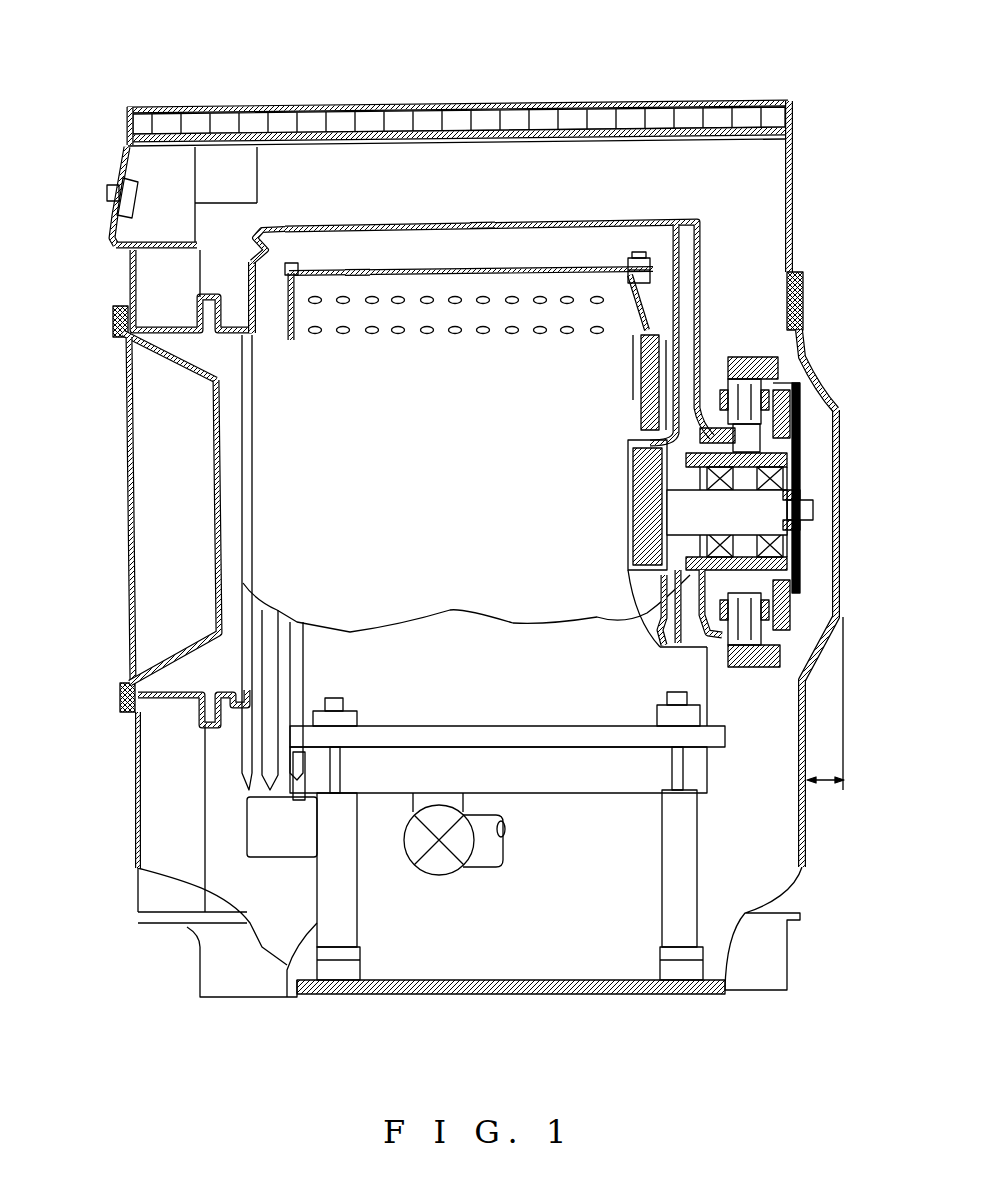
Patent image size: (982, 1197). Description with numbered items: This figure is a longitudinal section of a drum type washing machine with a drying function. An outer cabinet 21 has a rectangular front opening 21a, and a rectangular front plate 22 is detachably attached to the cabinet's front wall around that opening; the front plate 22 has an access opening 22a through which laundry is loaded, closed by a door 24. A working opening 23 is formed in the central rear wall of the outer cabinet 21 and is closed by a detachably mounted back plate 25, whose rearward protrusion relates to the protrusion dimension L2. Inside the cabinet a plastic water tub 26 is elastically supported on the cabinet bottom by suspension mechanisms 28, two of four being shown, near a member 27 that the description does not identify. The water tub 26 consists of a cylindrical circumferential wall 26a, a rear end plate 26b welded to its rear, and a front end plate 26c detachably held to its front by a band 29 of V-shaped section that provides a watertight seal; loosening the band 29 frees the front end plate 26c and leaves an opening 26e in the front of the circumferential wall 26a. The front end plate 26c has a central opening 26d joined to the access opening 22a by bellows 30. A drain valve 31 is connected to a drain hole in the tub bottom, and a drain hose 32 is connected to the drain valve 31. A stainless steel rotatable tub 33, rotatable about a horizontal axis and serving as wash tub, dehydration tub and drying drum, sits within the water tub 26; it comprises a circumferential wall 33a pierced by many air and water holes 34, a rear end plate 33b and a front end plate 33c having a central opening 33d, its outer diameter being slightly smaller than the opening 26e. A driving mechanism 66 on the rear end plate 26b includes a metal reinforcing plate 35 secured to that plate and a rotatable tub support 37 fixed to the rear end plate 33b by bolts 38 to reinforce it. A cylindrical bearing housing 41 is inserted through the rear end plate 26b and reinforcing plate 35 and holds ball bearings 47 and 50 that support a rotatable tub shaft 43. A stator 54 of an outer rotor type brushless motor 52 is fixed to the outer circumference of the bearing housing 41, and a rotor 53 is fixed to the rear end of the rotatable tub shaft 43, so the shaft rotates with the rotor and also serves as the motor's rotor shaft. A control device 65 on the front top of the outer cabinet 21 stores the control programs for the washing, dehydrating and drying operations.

The outer cabinet 21 is at (792, 190).
The front opening 21a is at (153, 257).
The front plate 22 is at (118, 305).
The access opening 22a is at (163, 343).
The working opening 23 is at (807, 341).
The door 24 is at (127, 545).
The back plate 25 is at (838, 440).
The water tub 26 is at (521, 228).
The circumferential wall 26a is at (482, 226).
The rear end plate 26b is at (679, 262).
The front end plate 26c is at (247, 292).
The central opening 26d is at (215, 390).
The opening 26e is at (257, 236).
The base frame 27 is at (491, 735).
The suspension mechanisms 28 is at (315, 913).
The band 29 is at (289, 270).
The bellows 30 is at (180, 325).
The drain valve 31 is at (438, 877).
The drain hose 32 is at (487, 868).
The rotatable tub 33 is at (445, 270).
The circumferential wall 33a is at (358, 270).
The rear end plate 33b is at (600, 275).
The front end plate 33c is at (305, 270).
The central opening 33d is at (267, 490).
The holes 34 is at (455, 337).
The reinforcing plate 35 is at (655, 330).
The rotatable tub support 37 is at (679, 300).
The bolts 38 is at (637, 258).
The bearing housing 41 is at (815, 592).
The rotatable tub shaft 43 is at (670, 593).
The ball bearing 47 is at (717, 600).
The ball bearing 50 is at (800, 555).
The brushless motor 52 is at (808, 409).
The rotor 53 is at (805, 450).
The stator 54 is at (750, 352).
The control device 65 is at (128, 178).
The rotatable tub driving mechanism 66 is at (803, 300).
The protrusion dimension L2 is at (826, 718).